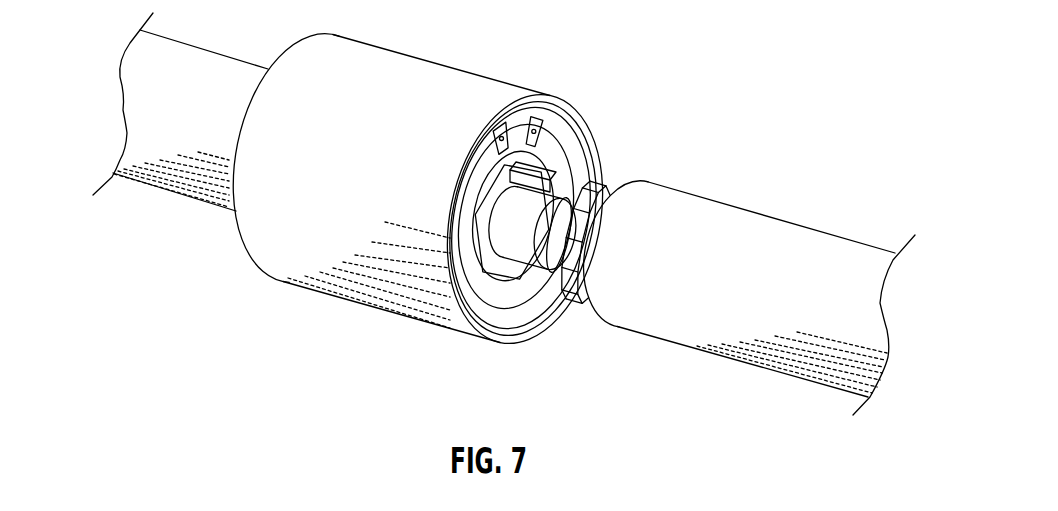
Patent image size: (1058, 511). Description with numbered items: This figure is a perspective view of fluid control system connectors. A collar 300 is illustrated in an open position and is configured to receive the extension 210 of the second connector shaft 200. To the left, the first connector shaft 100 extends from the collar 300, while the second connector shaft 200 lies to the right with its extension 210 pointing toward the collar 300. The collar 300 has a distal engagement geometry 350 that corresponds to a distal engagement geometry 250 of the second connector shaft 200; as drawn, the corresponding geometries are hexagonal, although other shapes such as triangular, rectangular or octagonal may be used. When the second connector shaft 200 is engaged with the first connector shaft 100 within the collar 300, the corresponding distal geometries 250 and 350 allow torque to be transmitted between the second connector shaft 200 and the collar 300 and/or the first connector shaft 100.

The first connector shaft 100 is at (205, 45).
The second connector shaft 200 is at (775, 220).
The extension portion 210 is at (553, 190).
The distal engagement geometry 250 is at (597, 187).
The collar 300 is at (433, 60).
The distal engagement geometry 350 is at (550, 140).